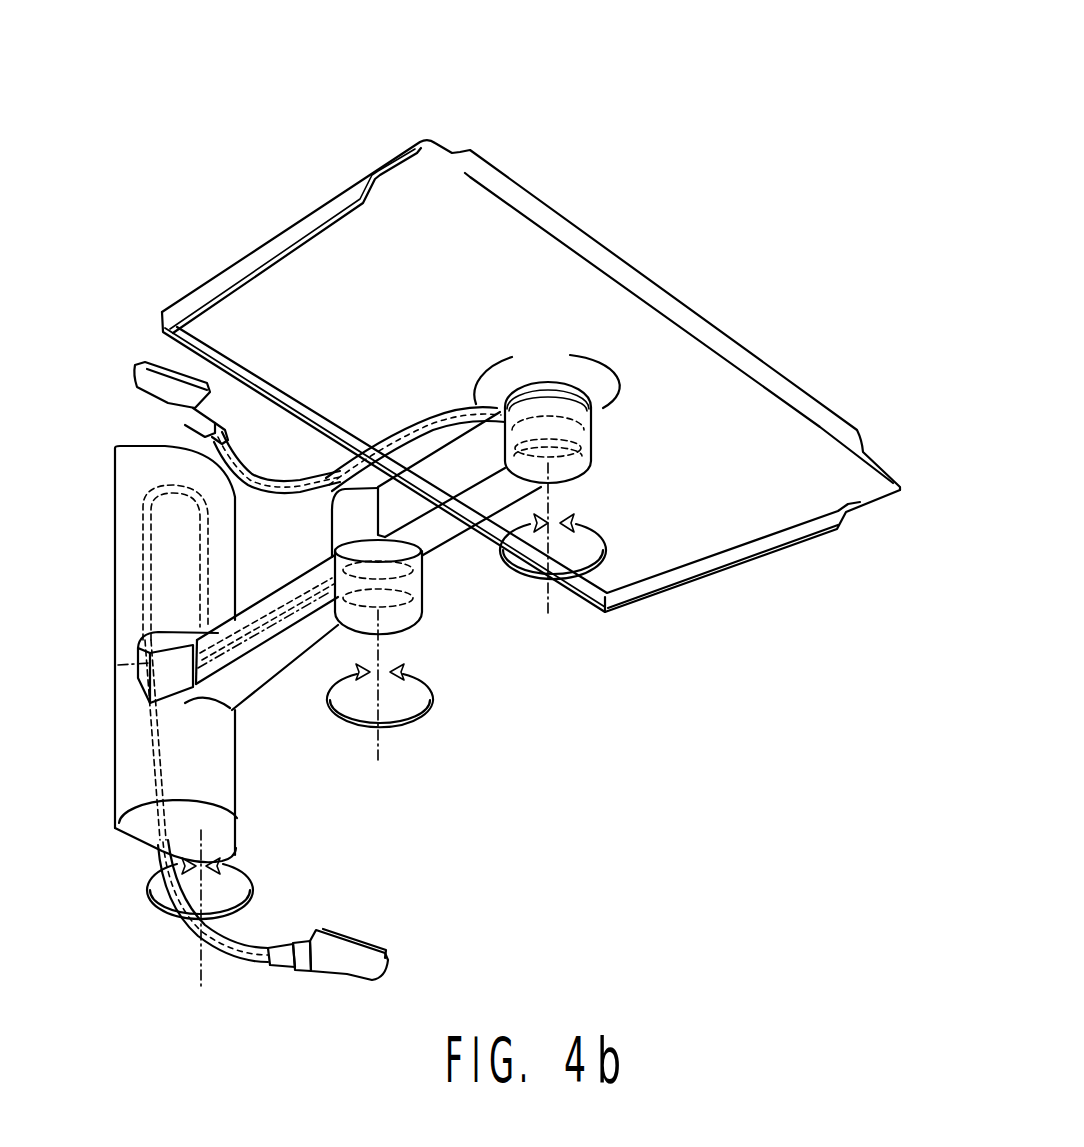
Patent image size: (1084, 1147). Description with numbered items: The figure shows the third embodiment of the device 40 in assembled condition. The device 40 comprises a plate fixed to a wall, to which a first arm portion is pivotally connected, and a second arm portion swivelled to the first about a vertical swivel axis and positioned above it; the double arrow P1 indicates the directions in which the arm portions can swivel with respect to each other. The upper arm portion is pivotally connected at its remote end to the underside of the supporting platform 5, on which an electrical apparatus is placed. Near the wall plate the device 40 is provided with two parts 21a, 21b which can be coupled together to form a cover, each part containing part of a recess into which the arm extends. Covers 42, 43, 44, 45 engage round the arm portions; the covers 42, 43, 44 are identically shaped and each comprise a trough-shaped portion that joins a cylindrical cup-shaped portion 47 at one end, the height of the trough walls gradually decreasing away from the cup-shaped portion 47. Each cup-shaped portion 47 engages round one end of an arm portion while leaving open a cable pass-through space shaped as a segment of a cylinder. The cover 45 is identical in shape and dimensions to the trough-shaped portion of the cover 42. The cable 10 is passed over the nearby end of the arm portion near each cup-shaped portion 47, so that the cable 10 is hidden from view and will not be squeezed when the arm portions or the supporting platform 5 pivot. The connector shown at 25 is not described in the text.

The device 40 is at (621, 221).
The supporting platform 5 is at (475, 215).
The cup-shaped portion 47 is at (343, 500).
The double arrow P1 is at (432, 718).
The cover 43 is at (443, 528).
The cover 44 is at (433, 463).
The cover 42 is at (272, 667).
The cover 45 is at (273, 610).
The part of cover 21a is at (140, 468).
The part of cover 21b is at (125, 771).
The cable 10 is at (252, 947).
The upper cable connector 25 is at (133, 382).